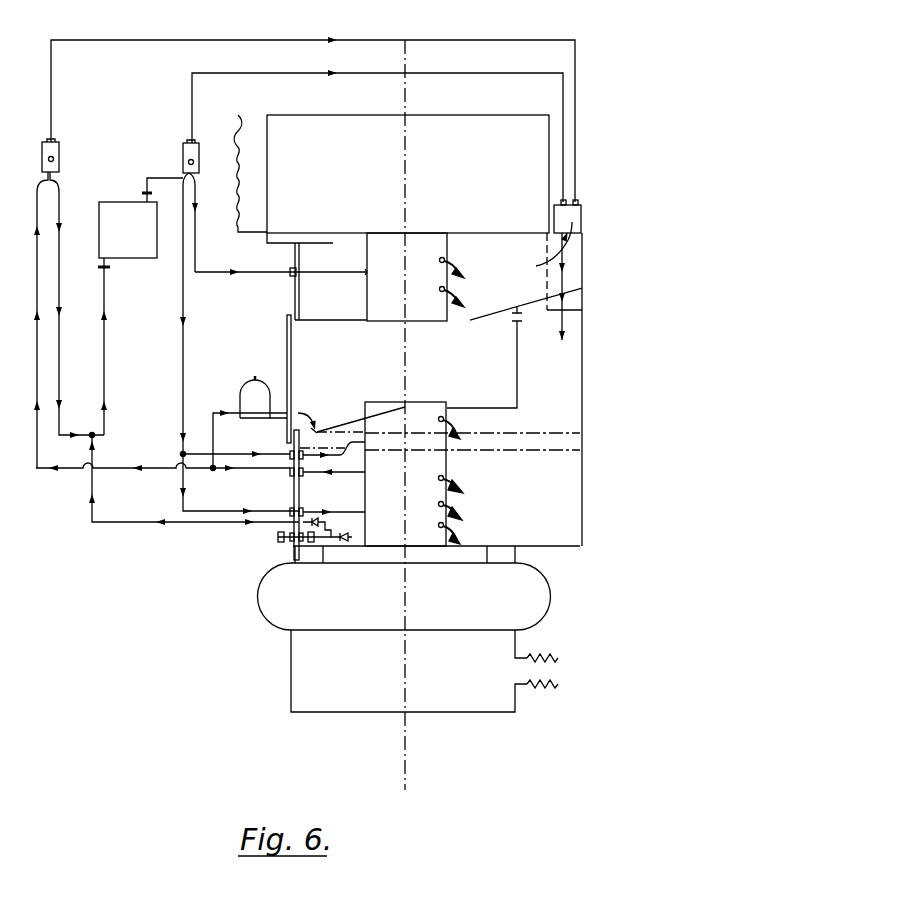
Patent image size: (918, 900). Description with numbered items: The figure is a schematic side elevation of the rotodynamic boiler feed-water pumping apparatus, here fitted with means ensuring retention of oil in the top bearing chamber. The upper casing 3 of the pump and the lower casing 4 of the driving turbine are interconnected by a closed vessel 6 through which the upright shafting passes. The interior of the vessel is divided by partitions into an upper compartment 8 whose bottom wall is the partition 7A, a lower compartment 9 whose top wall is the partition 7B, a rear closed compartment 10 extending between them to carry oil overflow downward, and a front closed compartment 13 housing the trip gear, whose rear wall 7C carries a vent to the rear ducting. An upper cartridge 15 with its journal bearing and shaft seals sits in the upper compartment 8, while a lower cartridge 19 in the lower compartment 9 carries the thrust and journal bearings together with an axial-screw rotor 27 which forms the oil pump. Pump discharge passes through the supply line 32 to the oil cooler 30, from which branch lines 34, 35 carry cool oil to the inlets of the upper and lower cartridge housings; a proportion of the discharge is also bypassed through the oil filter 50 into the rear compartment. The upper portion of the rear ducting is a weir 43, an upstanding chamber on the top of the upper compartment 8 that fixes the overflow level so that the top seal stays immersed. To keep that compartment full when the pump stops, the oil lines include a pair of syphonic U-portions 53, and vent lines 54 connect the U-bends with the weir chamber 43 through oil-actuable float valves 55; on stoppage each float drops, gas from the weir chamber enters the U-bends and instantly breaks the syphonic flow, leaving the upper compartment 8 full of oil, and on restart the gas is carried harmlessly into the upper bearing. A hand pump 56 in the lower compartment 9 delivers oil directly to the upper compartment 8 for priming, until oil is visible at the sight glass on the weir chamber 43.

The casing 3 is at (531, 159).
The casing 4 is at (300, 654).
The closed vessel 6 is at (584, 319).
The partition 7A is at (470, 320).
The partition 7B is at (473, 408).
The rear wall 7C is at (517, 350).
The upper compartment 8 is at (522, 280).
The lower compartment 9 is at (567, 537).
The rear closed compartment 10 is at (568, 353).
The front closed compartment 13 is at (398, 373).
The upper cartridge 15 is at (449, 265).
The lower cartridge 19 is at (460, 490).
The axial-screw rotor 27 is at (438, 462).
The oil cooler 30 is at (108, 205).
The supply line 32 is at (42, 470).
The branch line 34 is at (260, 273).
The branch line 35 is at (183, 355).
The weir 43 is at (581, 212).
The oil filter 50 is at (259, 390).
The syphonic U-portion 53 is at (57, 277).
The vent line 54 is at (224, 40).
The float valve 55 is at (59, 158).
The hand pump 56 is at (307, 543).